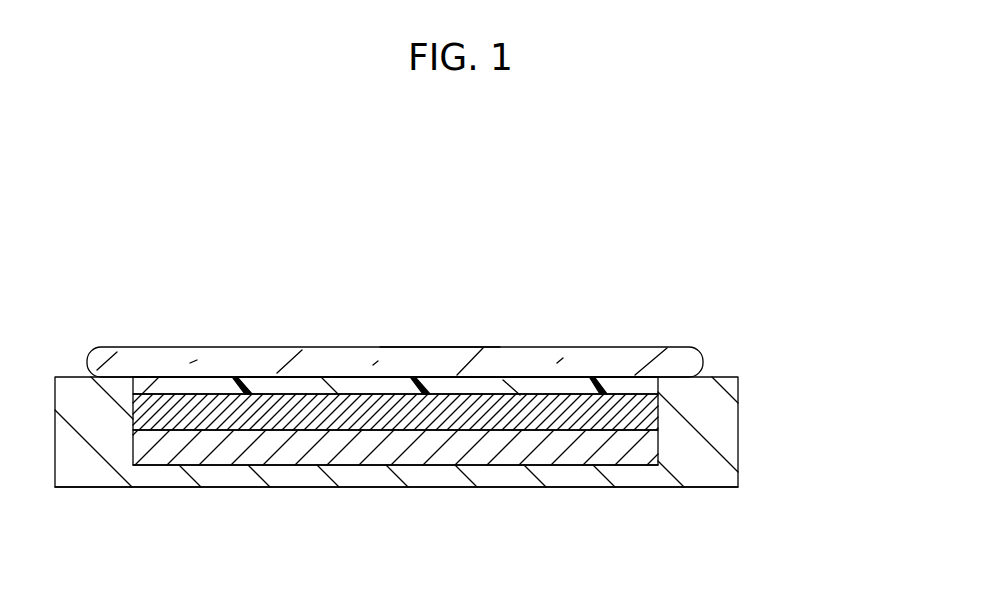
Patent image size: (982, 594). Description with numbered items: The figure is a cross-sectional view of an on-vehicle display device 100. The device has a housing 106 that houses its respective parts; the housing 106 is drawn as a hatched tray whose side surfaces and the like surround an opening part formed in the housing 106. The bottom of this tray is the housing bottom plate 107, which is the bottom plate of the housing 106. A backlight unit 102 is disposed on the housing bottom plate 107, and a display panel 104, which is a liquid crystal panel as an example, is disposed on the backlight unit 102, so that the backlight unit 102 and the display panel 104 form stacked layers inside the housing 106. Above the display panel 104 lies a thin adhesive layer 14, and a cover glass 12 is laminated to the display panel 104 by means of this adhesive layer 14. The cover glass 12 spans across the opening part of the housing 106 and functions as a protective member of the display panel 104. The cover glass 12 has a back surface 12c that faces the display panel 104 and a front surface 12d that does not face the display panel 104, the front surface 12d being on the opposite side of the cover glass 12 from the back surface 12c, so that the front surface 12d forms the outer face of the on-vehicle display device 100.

The on-vehicle display device 100 is at (657, 225).
The backlight unit 102 is at (200, 448).
The display panel 104 is at (270, 413).
The housing 106 is at (688, 452).
The housing bottom plate 107 is at (372, 477).
The cover glass 12 is at (615, 367).
The back surface 12c is at (520, 388).
The front surface 12d is at (440, 347).
The adhesive layer 14 is at (356, 388).